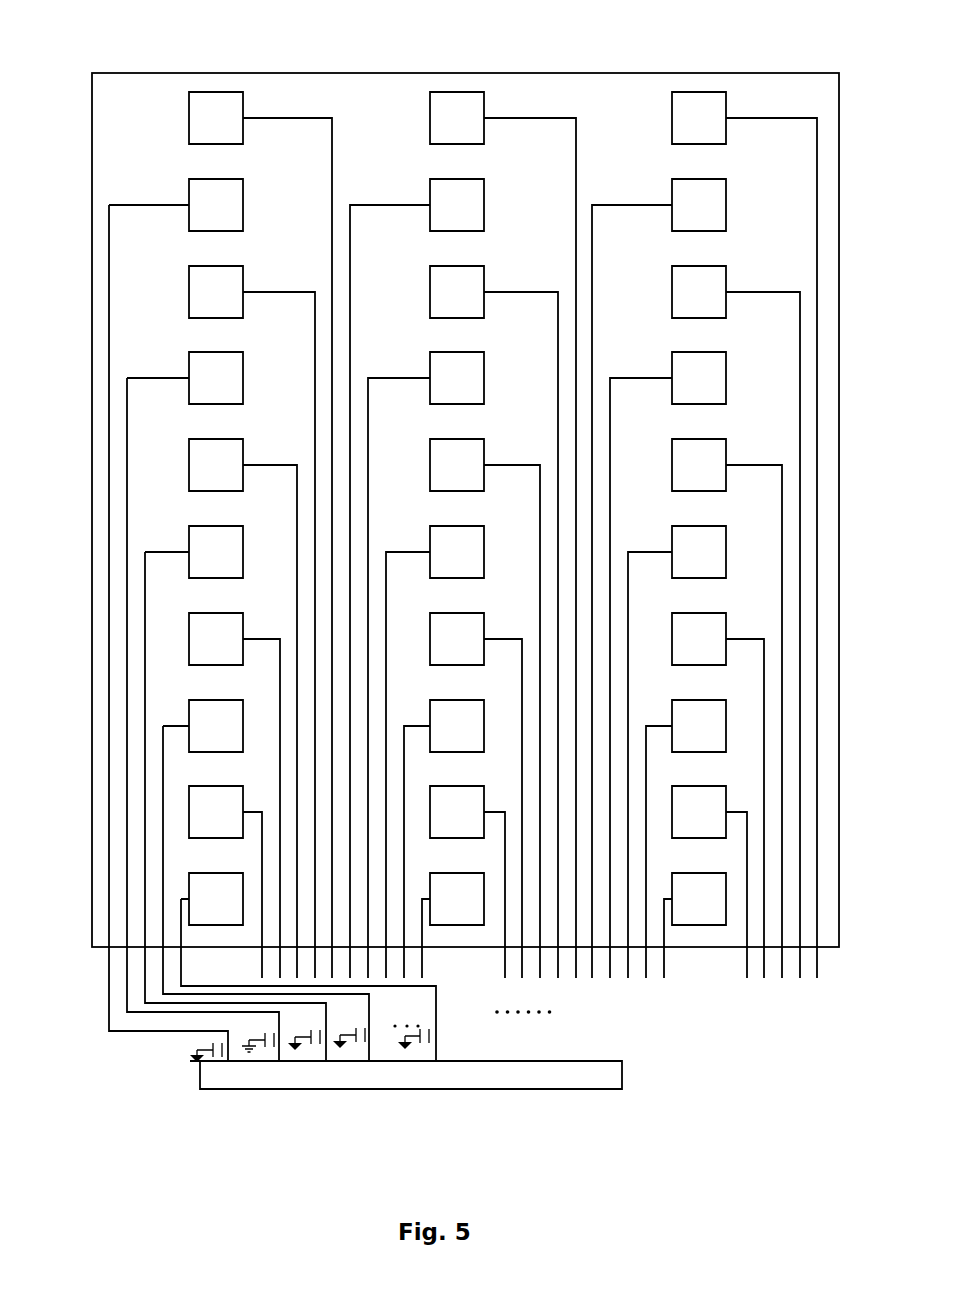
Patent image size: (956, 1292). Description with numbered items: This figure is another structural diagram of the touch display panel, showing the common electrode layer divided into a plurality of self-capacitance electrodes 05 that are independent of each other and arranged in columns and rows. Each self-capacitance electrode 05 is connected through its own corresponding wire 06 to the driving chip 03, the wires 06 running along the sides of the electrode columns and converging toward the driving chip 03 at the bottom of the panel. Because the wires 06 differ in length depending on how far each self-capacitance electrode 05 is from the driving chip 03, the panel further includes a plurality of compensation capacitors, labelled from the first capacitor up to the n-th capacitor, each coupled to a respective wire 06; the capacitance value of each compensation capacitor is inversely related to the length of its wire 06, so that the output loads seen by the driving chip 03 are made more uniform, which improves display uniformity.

The self-capacitance electrode 05 is at (215, 91).
The wire 06 is at (109, 927).
The driving chip 03 is at (350, 1076).